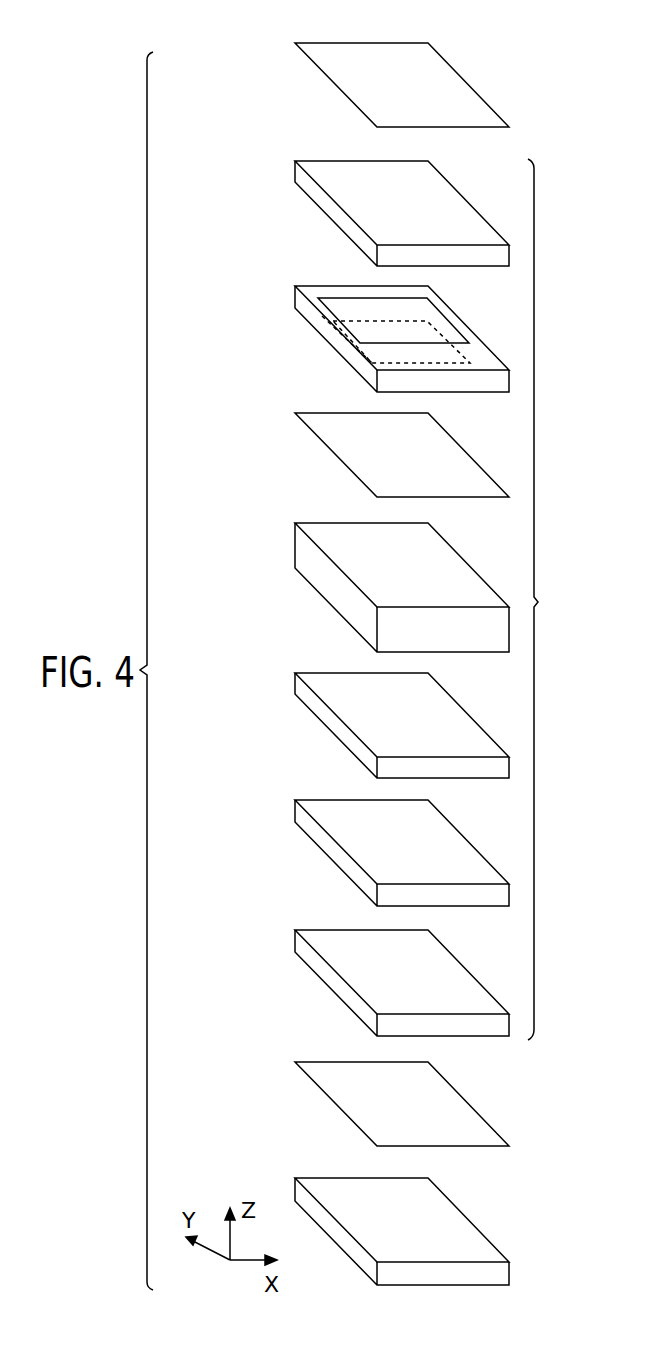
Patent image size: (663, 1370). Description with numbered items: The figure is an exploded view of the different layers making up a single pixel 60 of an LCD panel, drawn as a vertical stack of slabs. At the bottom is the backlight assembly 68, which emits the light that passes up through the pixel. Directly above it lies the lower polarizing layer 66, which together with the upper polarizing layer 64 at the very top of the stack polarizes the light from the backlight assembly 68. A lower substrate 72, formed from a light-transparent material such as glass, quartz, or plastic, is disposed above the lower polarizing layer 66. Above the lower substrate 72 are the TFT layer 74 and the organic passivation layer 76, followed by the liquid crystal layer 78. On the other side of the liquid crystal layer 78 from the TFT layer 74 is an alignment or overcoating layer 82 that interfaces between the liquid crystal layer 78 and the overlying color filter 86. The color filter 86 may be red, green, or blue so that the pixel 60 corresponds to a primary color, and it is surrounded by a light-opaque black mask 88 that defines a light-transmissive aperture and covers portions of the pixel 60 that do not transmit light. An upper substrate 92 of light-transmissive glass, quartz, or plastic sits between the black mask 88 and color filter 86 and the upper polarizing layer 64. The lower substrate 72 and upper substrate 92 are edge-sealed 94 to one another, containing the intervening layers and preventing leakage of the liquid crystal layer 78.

The pixel 60 is at (326, 21).
The upper polarizing layer 64 is at (452, 67).
The upper substrate 92 is at (452, 185).
The black mask 88 is at (386, 324).
The color filter 86 is at (423, 337).
The overcoating layer 82 is at (452, 437).
The liquid crystal layer 78 is at (452, 545).
The organic passivation layer 76 is at (452, 692).
The TFT layer 74 is at (452, 820).
The lower substrate 72 is at (452, 950).
The lower polarizing layer 66 is at (452, 1084).
The backlight assembly 68 is at (450, 1197).
The edge seal 94 is at (538, 602).